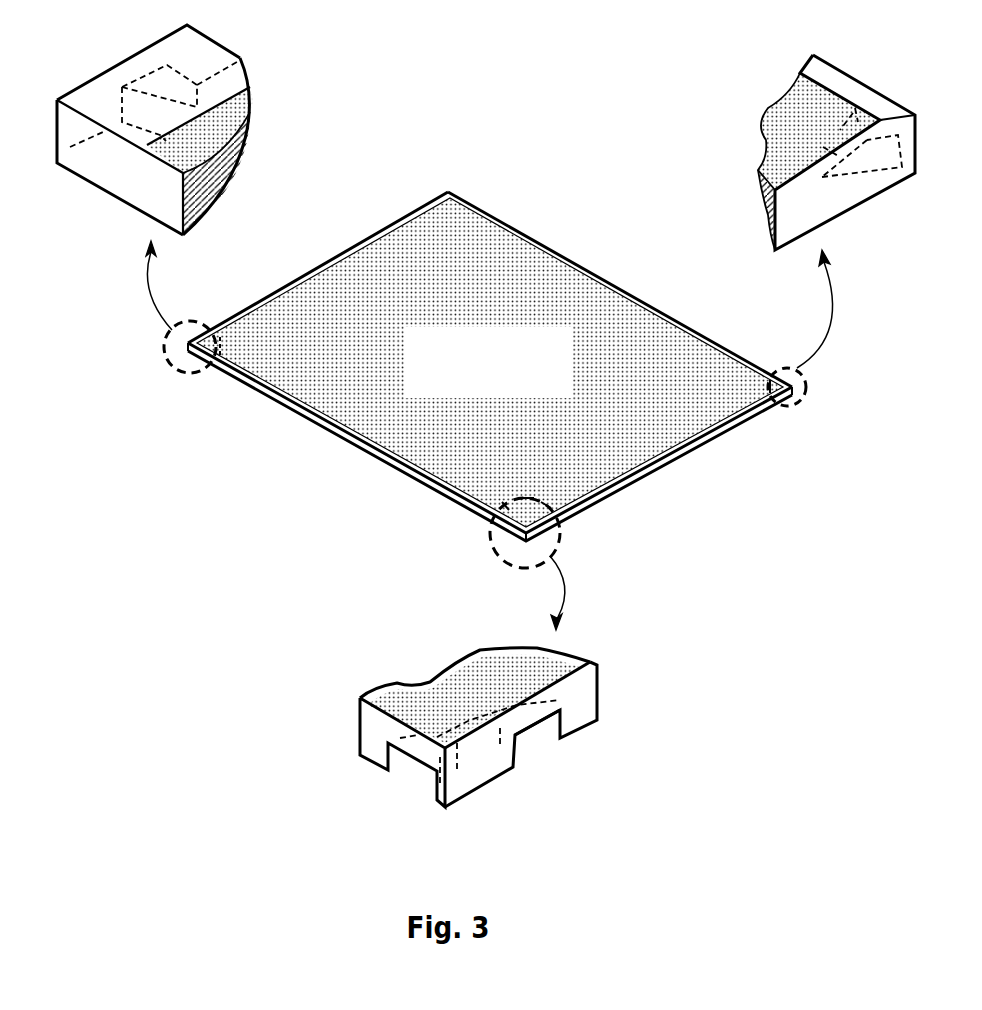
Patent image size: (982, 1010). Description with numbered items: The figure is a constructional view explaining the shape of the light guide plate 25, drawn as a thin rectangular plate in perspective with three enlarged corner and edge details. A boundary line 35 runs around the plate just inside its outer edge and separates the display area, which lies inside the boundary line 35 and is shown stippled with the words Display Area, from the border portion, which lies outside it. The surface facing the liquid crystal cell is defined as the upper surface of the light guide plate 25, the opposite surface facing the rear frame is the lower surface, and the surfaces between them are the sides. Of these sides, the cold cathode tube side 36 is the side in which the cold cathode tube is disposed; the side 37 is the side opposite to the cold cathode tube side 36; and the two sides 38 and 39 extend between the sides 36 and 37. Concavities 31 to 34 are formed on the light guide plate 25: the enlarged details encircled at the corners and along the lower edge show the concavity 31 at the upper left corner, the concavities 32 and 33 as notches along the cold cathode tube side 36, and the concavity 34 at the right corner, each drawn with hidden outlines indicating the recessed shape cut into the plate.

The light guide plate 25 is at (504, 392).
The concavity 31 is at (173, 90).
The concavity 32 is at (418, 772).
The concavity 33 is at (528, 743).
The concavity 34 is at (855, 163).
The boundary line 35 is at (510, 232).
The cold cathode tube side 36 is at (360, 447).
The side opposite to the cold cathode tube side 37 is at (572, 262).
The side 38 is at (331, 258).
The side 39 is at (680, 455).